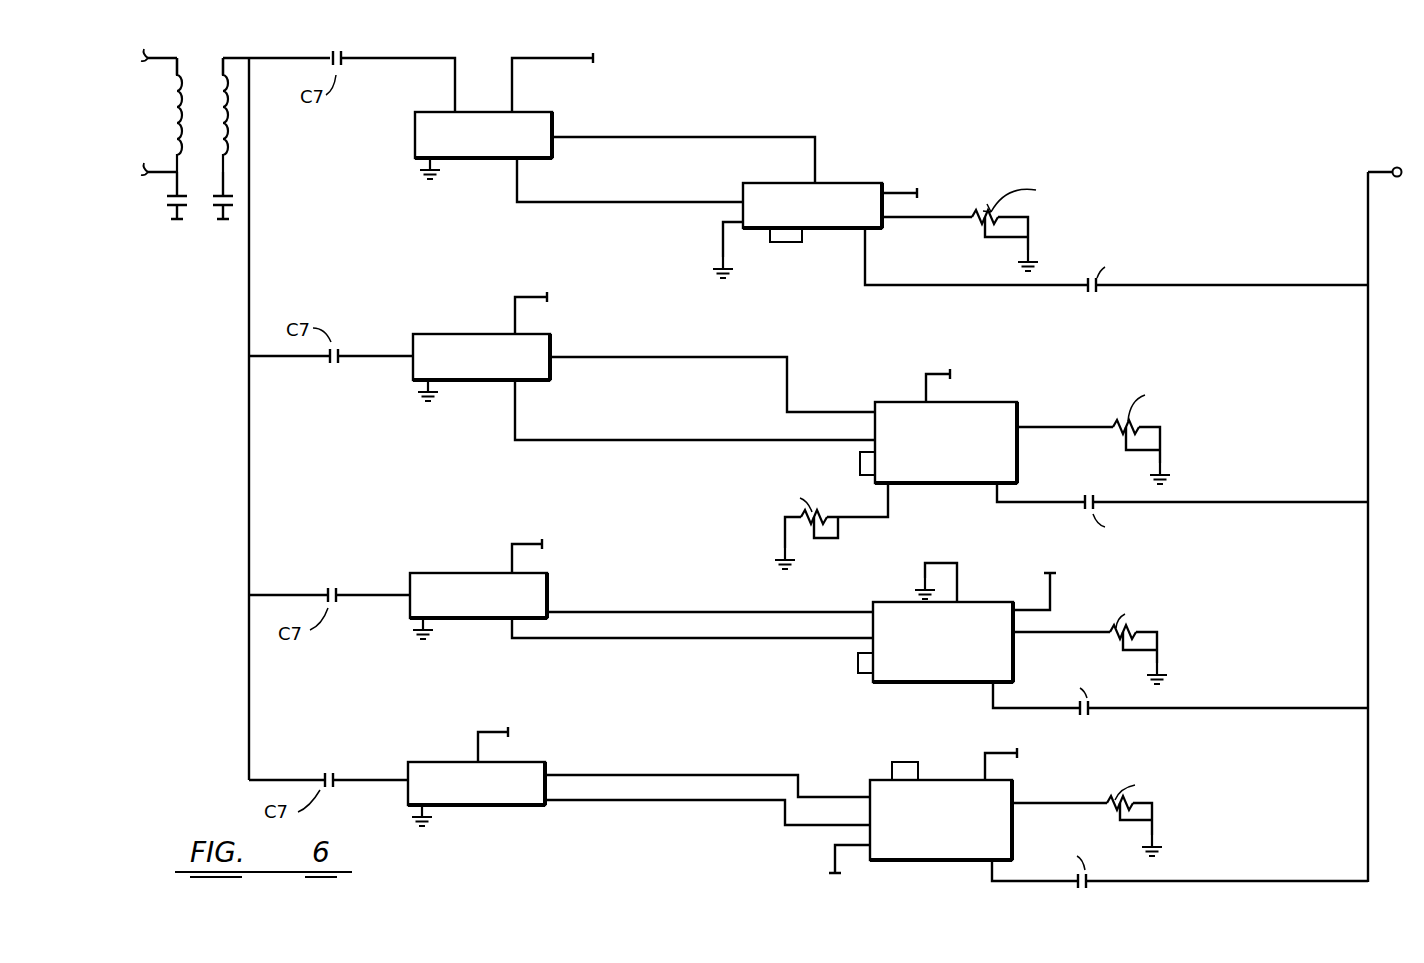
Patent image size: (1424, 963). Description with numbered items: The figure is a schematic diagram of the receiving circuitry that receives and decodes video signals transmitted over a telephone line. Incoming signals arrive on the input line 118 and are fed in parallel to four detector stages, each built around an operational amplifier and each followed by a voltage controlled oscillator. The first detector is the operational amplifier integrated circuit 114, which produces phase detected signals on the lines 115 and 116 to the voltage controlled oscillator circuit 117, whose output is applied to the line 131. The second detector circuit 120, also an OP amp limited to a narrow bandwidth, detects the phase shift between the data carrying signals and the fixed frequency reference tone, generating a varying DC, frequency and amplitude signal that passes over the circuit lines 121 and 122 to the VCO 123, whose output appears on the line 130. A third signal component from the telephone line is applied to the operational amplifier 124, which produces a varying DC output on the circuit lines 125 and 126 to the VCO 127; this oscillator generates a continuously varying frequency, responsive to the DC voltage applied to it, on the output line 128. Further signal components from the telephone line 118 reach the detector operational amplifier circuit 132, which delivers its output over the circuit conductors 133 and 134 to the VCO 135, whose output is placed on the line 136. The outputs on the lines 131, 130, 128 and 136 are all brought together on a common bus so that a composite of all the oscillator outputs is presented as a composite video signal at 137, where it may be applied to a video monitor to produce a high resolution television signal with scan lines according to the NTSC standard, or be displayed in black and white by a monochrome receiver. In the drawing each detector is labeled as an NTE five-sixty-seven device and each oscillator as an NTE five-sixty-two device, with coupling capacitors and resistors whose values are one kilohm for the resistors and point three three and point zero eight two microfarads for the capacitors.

The operational amplifier integrated circuit 114 is at (418, 111).
The line 115 is at (738, 137).
The line 116 is at (657, 202).
The voltage controlled oscillator circuit 117 is at (856, 183).
The input line 118 is at (150, 56).
The detector circuit 120 is at (420, 330).
The circuit line 121 is at (652, 357).
The circuit line 122 is at (668, 440).
The VCO 123 is at (975, 402).
The operational amplifier 124 is at (426, 569).
The circuit line 125 is at (710, 612).
The circuit line 126 is at (744, 641).
The VCO 127 is at (900, 601).
The output line 128 is at (1200, 708).
The line 130 is at (1240, 503).
The line 131 is at (1050, 287).
The detector operational amplifier circuit 132 is at (420, 756).
The circuit conductor 133 is at (638, 802).
The circuit conductor 134 is at (662, 775).
The VCO 135 is at (1017, 792).
The line 136 is at (1208, 881).
The composite video signal output 137 is at (1408, 155).